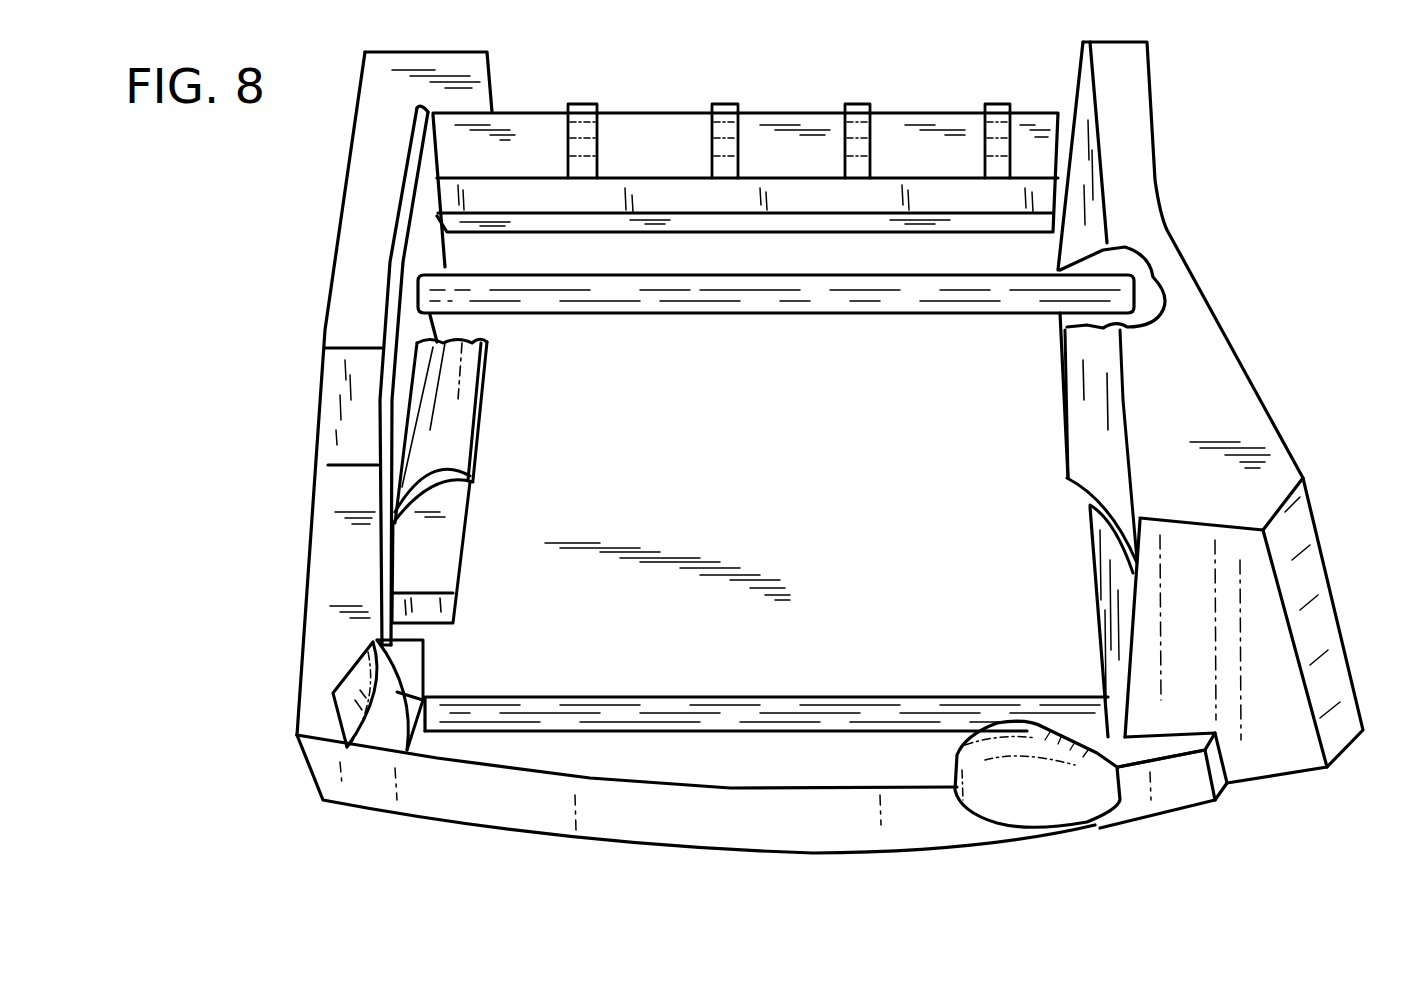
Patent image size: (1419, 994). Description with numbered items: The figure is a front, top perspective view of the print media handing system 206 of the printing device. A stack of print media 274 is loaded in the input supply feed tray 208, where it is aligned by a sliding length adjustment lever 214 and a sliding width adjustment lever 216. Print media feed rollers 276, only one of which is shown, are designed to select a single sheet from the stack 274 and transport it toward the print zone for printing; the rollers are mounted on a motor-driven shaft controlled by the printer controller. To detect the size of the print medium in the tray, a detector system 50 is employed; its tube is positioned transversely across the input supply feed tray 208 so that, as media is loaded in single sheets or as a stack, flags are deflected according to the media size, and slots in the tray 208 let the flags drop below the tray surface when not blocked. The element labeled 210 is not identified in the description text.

The detector system 50 is at (748, 292).
The print media handing system 206 is at (532, 858).
The input supply feed tray 208 is at (836, 769).
The side guide panel 210 is at (427, 450).
The sliding length adjustment lever 214 is at (1058, 795).
The sliding width adjustment lever 216 is at (392, 680).
The stack of print media 274 is at (548, 682).
The print media feed rollers 276 is at (592, 130).